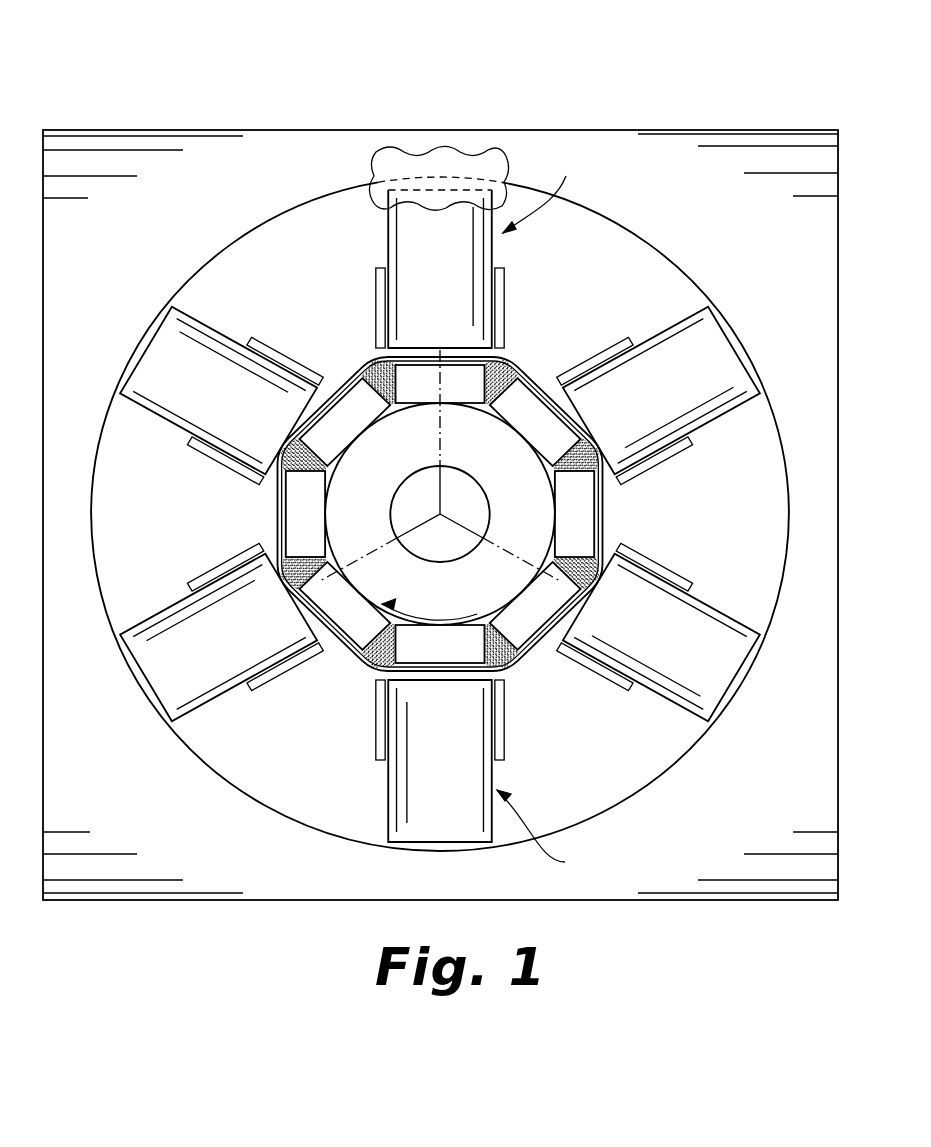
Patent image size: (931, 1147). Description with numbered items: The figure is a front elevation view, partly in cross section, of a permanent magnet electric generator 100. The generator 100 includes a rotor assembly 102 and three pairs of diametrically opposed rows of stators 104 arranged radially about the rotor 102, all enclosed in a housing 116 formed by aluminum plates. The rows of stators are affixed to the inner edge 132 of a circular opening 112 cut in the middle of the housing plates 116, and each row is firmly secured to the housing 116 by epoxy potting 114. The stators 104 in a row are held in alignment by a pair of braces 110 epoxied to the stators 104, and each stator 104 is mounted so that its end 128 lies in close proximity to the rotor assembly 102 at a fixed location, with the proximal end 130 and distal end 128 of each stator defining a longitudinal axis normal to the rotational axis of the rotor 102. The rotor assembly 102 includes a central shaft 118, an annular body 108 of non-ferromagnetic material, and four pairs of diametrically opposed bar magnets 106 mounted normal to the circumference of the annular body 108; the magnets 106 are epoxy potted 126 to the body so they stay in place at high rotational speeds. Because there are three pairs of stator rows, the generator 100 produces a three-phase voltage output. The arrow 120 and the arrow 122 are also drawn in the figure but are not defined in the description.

The electric machine 100 is at (205, 95).
The rotor 102 is at (270, 503).
The stator pole 104 is at (409, 285).
The permanent magnet 106 is at (326, 410).
The rotor core 108 is at (356, 470).
The pole shoe / coil side 110 is at (378, 302).
The stator 112 is at (270, 787).
The winding 114 is at (418, 148).
The housing 116 is at (114, 265).
The shaft 118 is at (416, 553).
The direction arrow 120 is at (557, 191).
The direction arrow 122 is at (551, 832).
The rotor outer surface 126 is at (372, 664).
The coil 128 is at (455, 195).
The air gap 130 is at (398, 350).
The stator outer surface 132 is at (185, 748).